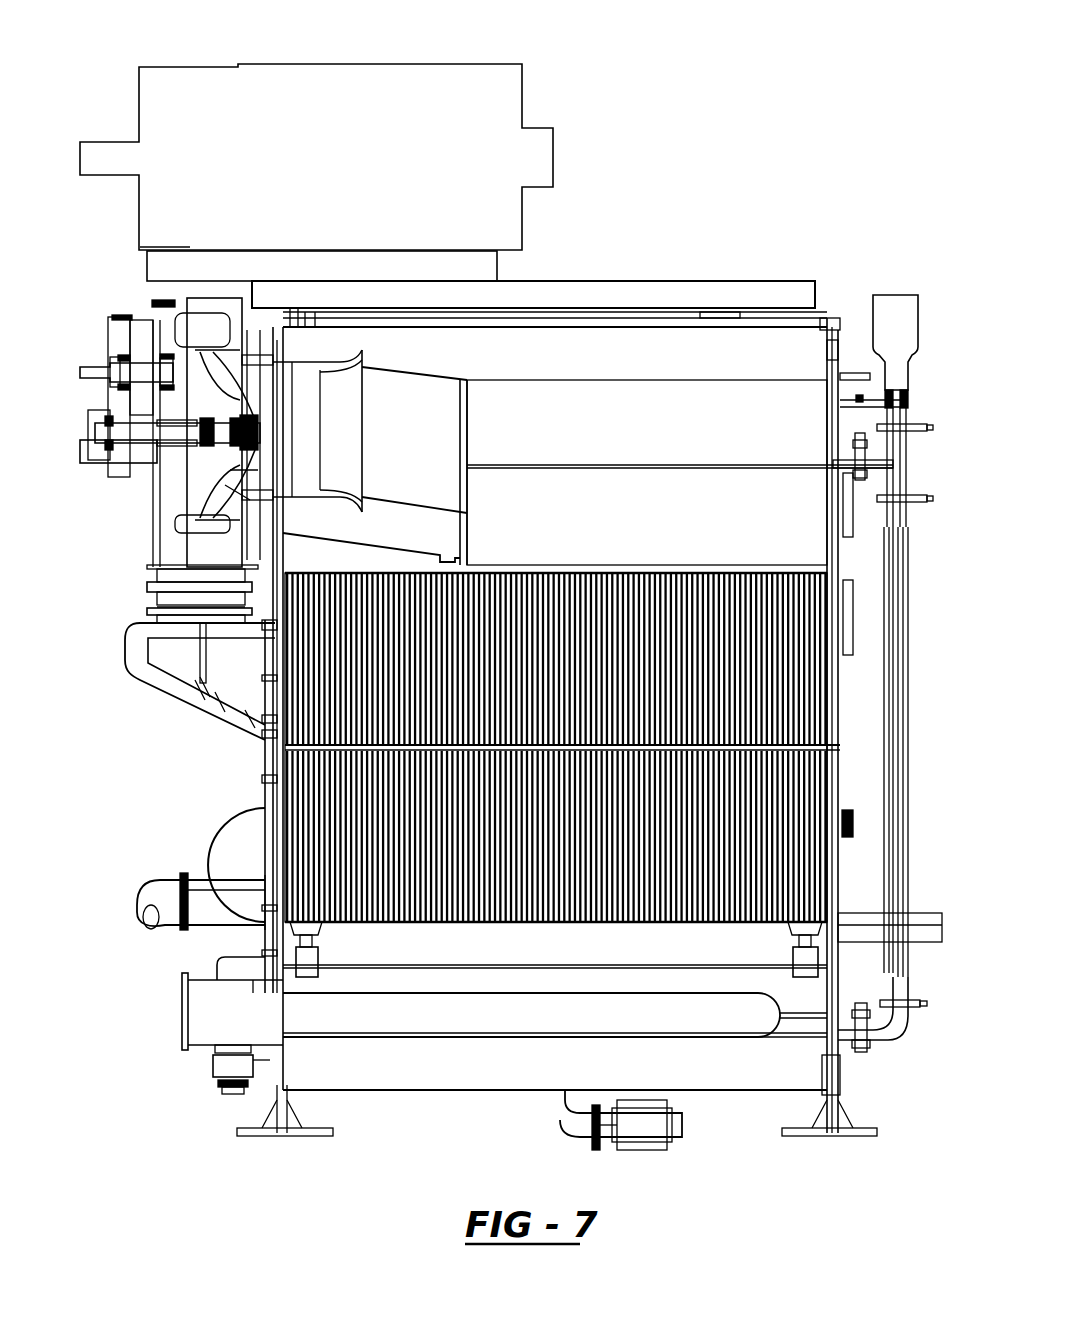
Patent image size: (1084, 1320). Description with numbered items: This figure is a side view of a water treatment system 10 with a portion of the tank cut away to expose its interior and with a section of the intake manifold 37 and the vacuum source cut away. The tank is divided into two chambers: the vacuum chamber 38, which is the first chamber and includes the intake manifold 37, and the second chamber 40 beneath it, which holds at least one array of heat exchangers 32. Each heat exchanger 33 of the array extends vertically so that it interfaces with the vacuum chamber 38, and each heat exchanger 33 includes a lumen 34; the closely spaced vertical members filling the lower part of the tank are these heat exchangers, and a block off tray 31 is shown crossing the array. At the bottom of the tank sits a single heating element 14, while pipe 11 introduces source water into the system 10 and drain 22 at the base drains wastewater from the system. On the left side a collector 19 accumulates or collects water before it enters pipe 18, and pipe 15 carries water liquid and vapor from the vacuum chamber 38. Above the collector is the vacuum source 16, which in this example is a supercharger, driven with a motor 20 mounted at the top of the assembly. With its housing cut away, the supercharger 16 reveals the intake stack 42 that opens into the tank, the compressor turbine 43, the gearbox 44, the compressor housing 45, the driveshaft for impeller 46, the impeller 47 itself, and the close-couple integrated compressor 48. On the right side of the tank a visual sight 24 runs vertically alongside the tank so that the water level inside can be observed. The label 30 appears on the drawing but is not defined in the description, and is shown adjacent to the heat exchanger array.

The system 10 is at (722, 84).
The pipe 11 is at (230, 1098).
The heating element 14 is at (200, 1045).
The pipe 15 is at (150, 590).
The vacuum source 16 is at (162, 300).
The pipe 18 is at (167, 927).
The collector 19 is at (225, 823).
The motor 20 is at (413, 65).
The drain 22 is at (565, 1113).
The visual sight 24 is at (905, 575).
The heat exchanger 30 is at (825, 745).
The block off tray 31 is at (840, 750).
The array of heat exchangers 32 is at (828, 786).
The heat exchanger 33 is at (810, 632).
The lumen 34 is at (770, 872).
The intake manifold 37 is at (467, 420).
The vacuum chamber 38 is at (810, 423).
The second chamber 40 is at (820, 892).
The intake stack 42 is at (360, 350).
The compressor turbine 43 is at (200, 370).
The gearbox 44 is at (103, 380).
The compressor housing 45 is at (110, 317).
The driveshaft for impeller 46 is at (103, 462).
The impeller 47 is at (200, 470).
The close-couple integrated compressor 48 is at (210, 320).